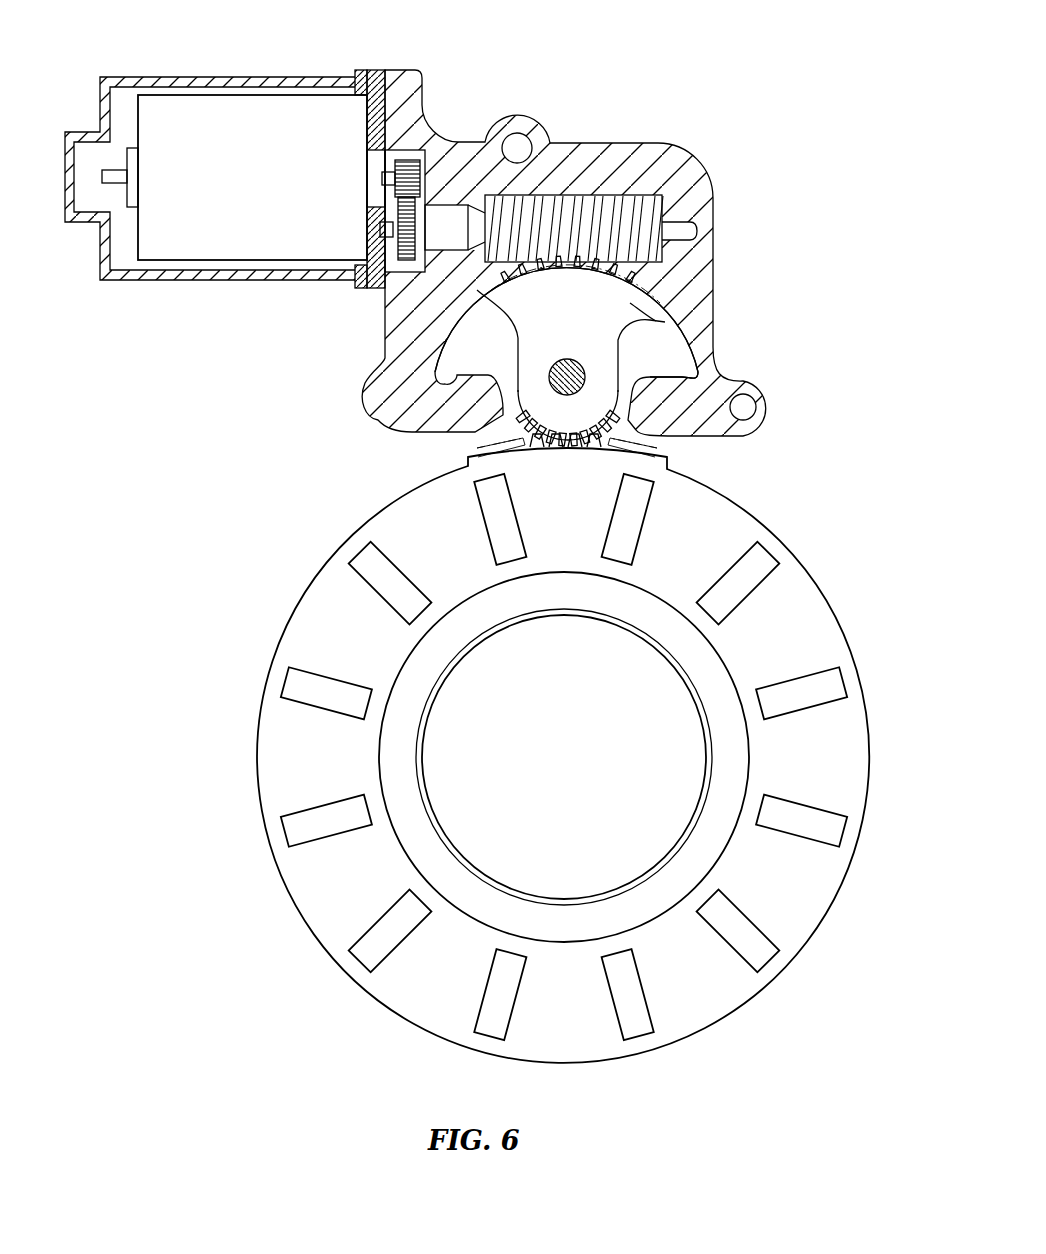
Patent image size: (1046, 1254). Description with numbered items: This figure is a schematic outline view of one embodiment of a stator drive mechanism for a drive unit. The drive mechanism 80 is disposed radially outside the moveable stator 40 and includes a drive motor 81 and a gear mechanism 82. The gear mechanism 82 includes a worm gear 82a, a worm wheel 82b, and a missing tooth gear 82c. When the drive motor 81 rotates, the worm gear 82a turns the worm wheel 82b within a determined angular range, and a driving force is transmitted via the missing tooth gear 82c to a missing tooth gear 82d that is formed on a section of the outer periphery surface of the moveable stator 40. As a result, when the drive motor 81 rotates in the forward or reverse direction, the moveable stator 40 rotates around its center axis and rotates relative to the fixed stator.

The moveable stator 40 is at (833, 567).
The drive mechanism 80 is at (613, 110).
The drive motor 81 is at (232, 112).
The gear mechanism 82 is at (643, 297).
The worm gear 82a is at (610, 197).
The worm wheel 82b is at (652, 320).
The missing tooth gear 82c is at (700, 352).
The missing tooth gear 82d is at (728, 335).